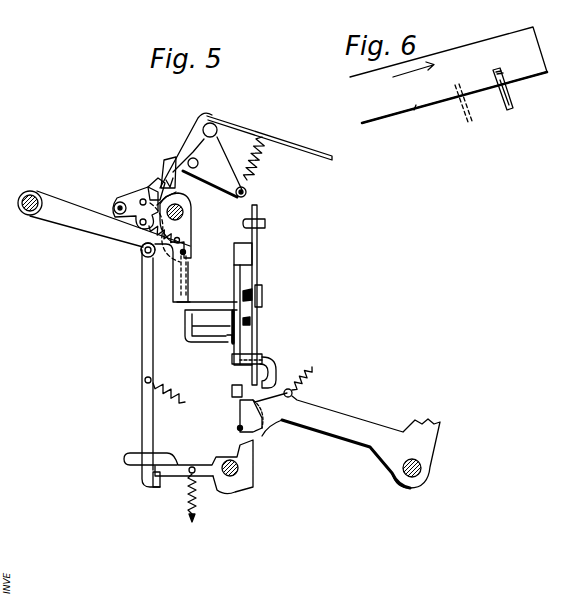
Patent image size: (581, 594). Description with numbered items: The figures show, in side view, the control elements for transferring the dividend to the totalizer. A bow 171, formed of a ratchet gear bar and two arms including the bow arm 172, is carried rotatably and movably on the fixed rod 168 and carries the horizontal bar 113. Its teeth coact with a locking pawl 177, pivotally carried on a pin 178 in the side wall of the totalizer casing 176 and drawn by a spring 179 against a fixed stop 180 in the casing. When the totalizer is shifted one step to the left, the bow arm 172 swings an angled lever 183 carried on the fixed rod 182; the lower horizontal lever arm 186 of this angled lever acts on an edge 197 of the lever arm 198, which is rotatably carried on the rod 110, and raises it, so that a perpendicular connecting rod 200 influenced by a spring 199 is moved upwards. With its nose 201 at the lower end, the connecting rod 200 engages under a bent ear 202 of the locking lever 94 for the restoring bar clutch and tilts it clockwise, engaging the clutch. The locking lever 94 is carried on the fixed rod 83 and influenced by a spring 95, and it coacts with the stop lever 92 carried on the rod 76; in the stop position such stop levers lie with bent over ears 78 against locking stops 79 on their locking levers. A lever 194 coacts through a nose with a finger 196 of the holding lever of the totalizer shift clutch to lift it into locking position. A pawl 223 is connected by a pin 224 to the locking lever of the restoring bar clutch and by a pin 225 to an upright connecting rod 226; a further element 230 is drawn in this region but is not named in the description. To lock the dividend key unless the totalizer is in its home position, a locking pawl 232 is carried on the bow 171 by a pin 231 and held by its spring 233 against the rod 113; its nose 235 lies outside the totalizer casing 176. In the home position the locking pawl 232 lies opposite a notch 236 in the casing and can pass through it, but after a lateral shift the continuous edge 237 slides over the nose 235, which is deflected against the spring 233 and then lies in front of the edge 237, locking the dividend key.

In FIG. 5, the rod 76 is at (423, 473).
In FIG. 5, the bent over ear 78 is at (238, 428).
In FIG. 5, the locking stop 79 is at (243, 412).
In FIG. 5, the fixed rod 83 is at (227, 483).
In FIG. 5, the stop lever 92 is at (352, 427).
In FIG. 5, the locking lever 94 is at (247, 457).
In FIG. 5, the spring 95 is at (188, 503).
In FIG. 5, the rod 110 is at (32, 192).
In FIG. 5, the horizontal bar 113 is at (115, 206).
In FIG. 5, the fixed rod 168 is at (185, 215).
In FIG. 5, the bow 171 is at (163, 207).
In FIG. 5, the bow arm 172 is at (182, 233).
In FIG. 5, the totalizer casing 176 is at (250, 127).
In FIG. 6, the totalizer casing 176 is at (500, 43).
In FIG. 5, the locking pawl 177 is at (223, 178).
In FIG. 5, the pin 178 is at (199, 163).
In FIG. 5, the spring 179 is at (257, 170).
In FIG. 5, the fixed stop 180 is at (211, 125).
In FIG. 6, the fixed rod 182 is at (570, 187).
In FIG. 5, the angled lever 183 is at (205, 341).
In FIG. 5, the lever arm 186 is at (186, 251).
In FIG. 5, the lever 194 is at (249, 332).
In FIG. 5, the finger 196 is at (270, 363).
In FIG. 5, the edge 197 is at (173, 302).
In FIG. 5, the lever arm 198 is at (65, 220).
In FIG. 5, the spring 199 is at (184, 391).
In FIG. 5, the connecting rod 200 is at (147, 400).
In FIG. 5, the nose 201 is at (153, 488).
In FIG. 5, the bent ear 202 is at (152, 473).
In FIG. 5, the pawl 223 is at (256, 268).
In FIG. 5, the pin 224 is at (264, 226).
In FIG. 5, the pin 225 is at (245, 298).
In FIG. 5, the upright connecting rod 226 is at (263, 295).
In FIG. 5, the stop 230 is at (242, 388).
In FIG. 5, the pin 231 is at (141, 199).
In FIG. 5, the locking pawl 232 is at (149, 186).
In FIG. 6, the locking pawl 232 is at (507, 107).
In FIG. 5, the spring 233 is at (152, 231).
In FIG. 5, the nose 235 is at (168, 162).
In FIG. 6, the nose 235 is at (497, 90).
In FIG. 6, the notch 236 is at (502, 72).
In FIG. 6, the continuous edge 237 is at (415, 108).